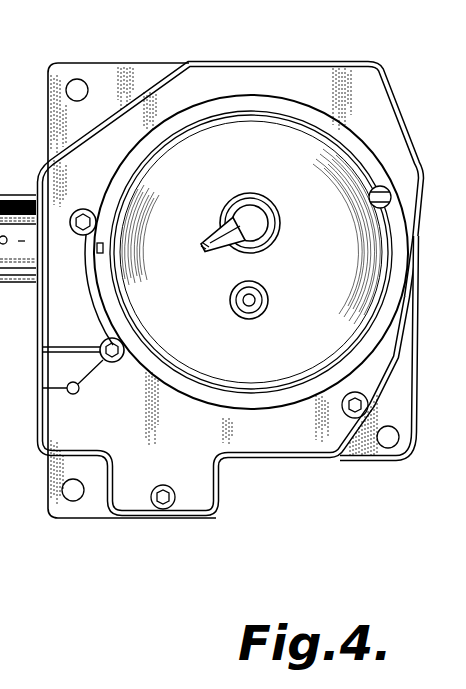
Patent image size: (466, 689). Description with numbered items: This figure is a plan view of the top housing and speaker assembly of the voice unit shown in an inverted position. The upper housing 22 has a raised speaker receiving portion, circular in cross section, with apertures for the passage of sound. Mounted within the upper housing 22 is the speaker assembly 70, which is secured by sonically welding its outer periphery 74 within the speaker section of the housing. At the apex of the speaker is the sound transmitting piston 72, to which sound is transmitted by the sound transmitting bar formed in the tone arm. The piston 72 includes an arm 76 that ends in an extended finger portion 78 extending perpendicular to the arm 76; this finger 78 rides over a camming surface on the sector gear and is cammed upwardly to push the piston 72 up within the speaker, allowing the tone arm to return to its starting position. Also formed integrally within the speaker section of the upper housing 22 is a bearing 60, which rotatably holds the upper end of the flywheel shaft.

The upper housing 22 is at (386, 108).
The bearing 60 is at (245, 303).
The speaker assembly 70 is at (280, 362).
The sound transmitting piston 72 is at (244, 198).
The outer periphery 74 is at (297, 108).
The arm 76 is at (207, 250).
The finger portion 78 is at (203, 244).